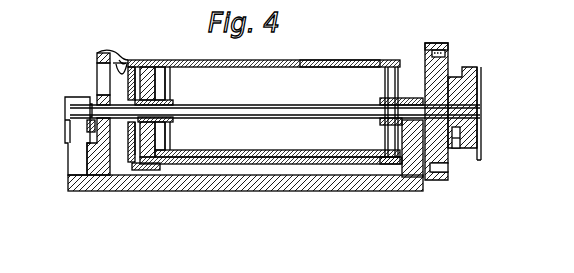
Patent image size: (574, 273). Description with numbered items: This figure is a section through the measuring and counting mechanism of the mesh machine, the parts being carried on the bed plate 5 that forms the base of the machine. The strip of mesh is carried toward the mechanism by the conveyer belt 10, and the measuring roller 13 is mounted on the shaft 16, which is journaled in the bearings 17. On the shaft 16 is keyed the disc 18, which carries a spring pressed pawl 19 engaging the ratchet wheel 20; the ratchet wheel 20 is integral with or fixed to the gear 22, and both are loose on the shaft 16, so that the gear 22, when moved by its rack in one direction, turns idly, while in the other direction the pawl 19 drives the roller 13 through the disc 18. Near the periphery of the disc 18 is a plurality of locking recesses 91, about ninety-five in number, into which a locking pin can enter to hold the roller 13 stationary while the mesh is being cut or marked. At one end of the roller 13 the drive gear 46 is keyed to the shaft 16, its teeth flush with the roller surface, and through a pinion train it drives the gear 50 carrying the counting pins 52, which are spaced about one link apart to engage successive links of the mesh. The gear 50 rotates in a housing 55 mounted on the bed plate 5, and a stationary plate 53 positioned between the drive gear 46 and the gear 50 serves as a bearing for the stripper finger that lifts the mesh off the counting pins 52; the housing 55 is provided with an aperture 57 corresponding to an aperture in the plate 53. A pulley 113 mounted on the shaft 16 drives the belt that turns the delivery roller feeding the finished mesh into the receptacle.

The bed plate 5 is at (228, 192).
The conveyer belt 10 is at (384, 60).
The measuring roller 13 is at (340, 67).
The shaft 16 is at (282, 108).
The bearings 17 is at (76, 97).
The disc 18 is at (440, 43).
The spring pressed pawl 19 is at (448, 55).
The ratchet wheel 20 is at (455, 72).
The gear 22 is at (458, 142).
The drive gear 46 is at (170, 82).
The gear 50 is at (124, 62).
The counting pins 52 is at (132, 66).
The stationary plate 53 is at (137, 62).
The housing 55 is at (100, 53).
The aperture 57 is at (101, 80).
The locking recesses 91 is at (432, 43).
The pulley 113 is at (481, 80).